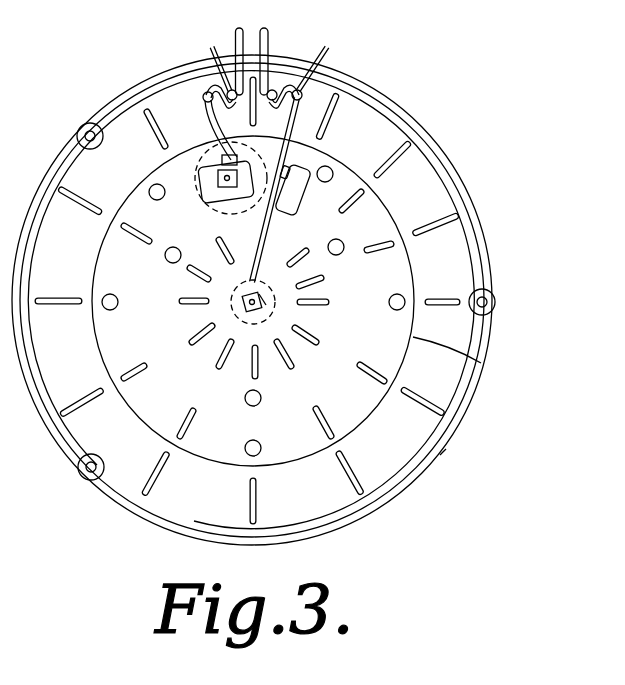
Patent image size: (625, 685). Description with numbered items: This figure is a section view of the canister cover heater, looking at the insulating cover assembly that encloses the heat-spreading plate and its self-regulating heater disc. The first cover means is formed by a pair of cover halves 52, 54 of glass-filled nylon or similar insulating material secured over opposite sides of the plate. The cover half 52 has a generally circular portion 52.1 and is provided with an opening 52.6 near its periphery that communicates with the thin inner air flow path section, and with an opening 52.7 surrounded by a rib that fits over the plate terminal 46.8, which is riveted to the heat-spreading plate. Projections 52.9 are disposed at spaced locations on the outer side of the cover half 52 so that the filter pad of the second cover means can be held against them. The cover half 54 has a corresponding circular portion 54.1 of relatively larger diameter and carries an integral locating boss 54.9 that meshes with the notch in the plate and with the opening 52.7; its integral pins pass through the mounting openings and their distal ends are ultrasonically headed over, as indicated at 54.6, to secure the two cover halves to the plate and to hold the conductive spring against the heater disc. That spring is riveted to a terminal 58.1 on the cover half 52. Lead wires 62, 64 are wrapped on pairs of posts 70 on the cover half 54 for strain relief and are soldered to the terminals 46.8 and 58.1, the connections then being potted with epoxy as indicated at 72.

The cover half 52 is at (397, 268).
The generally circular portion 52.1 is at (481, 363).
The opening 52.6 is at (290, 212).
The opening 52.7 is at (240, 237).
The projections 52.9 is at (220, 253).
The cover half 54 is at (440, 277).
The circular portion 54.1 is at (440, 456).
The headed-over pin ends 54.6 is at (108, 311).
The locating boss 54.9 is at (220, 146).
The terminal 58.1 is at (274, 304).
The lead wire 62 is at (238, 29).
The lead wire 64 is at (268, 50).
The posts 70 is at (211, 47).
The potting 72 is at (196, 160).
The terminal 46.8 is at (233, 200).